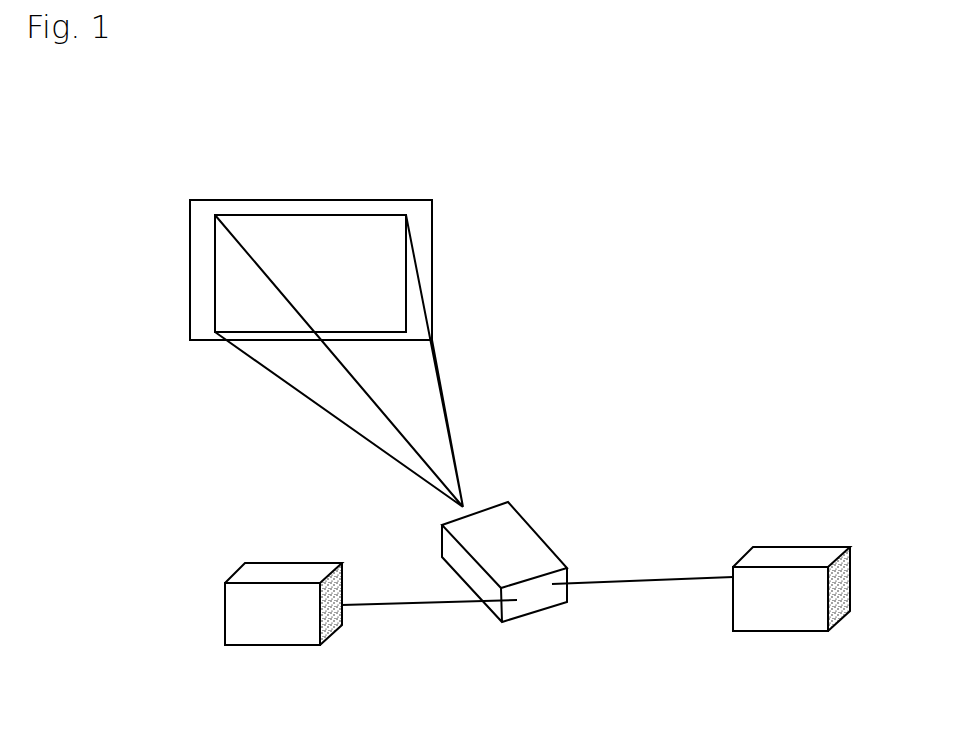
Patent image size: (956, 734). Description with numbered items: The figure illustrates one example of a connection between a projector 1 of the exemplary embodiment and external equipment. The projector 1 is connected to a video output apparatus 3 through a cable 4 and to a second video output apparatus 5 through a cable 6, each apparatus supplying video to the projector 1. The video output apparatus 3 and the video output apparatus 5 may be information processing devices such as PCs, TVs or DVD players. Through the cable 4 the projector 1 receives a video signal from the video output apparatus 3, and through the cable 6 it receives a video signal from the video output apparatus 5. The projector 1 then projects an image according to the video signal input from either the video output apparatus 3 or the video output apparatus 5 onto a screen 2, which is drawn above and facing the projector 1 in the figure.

The projector 1 is at (520, 508).
The screen 2 is at (191, 200).
The video output apparatus 3 is at (313, 562).
The cable 4 is at (365, 609).
The video output apparatus 5 is at (770, 548).
The cable 6 is at (597, 583).